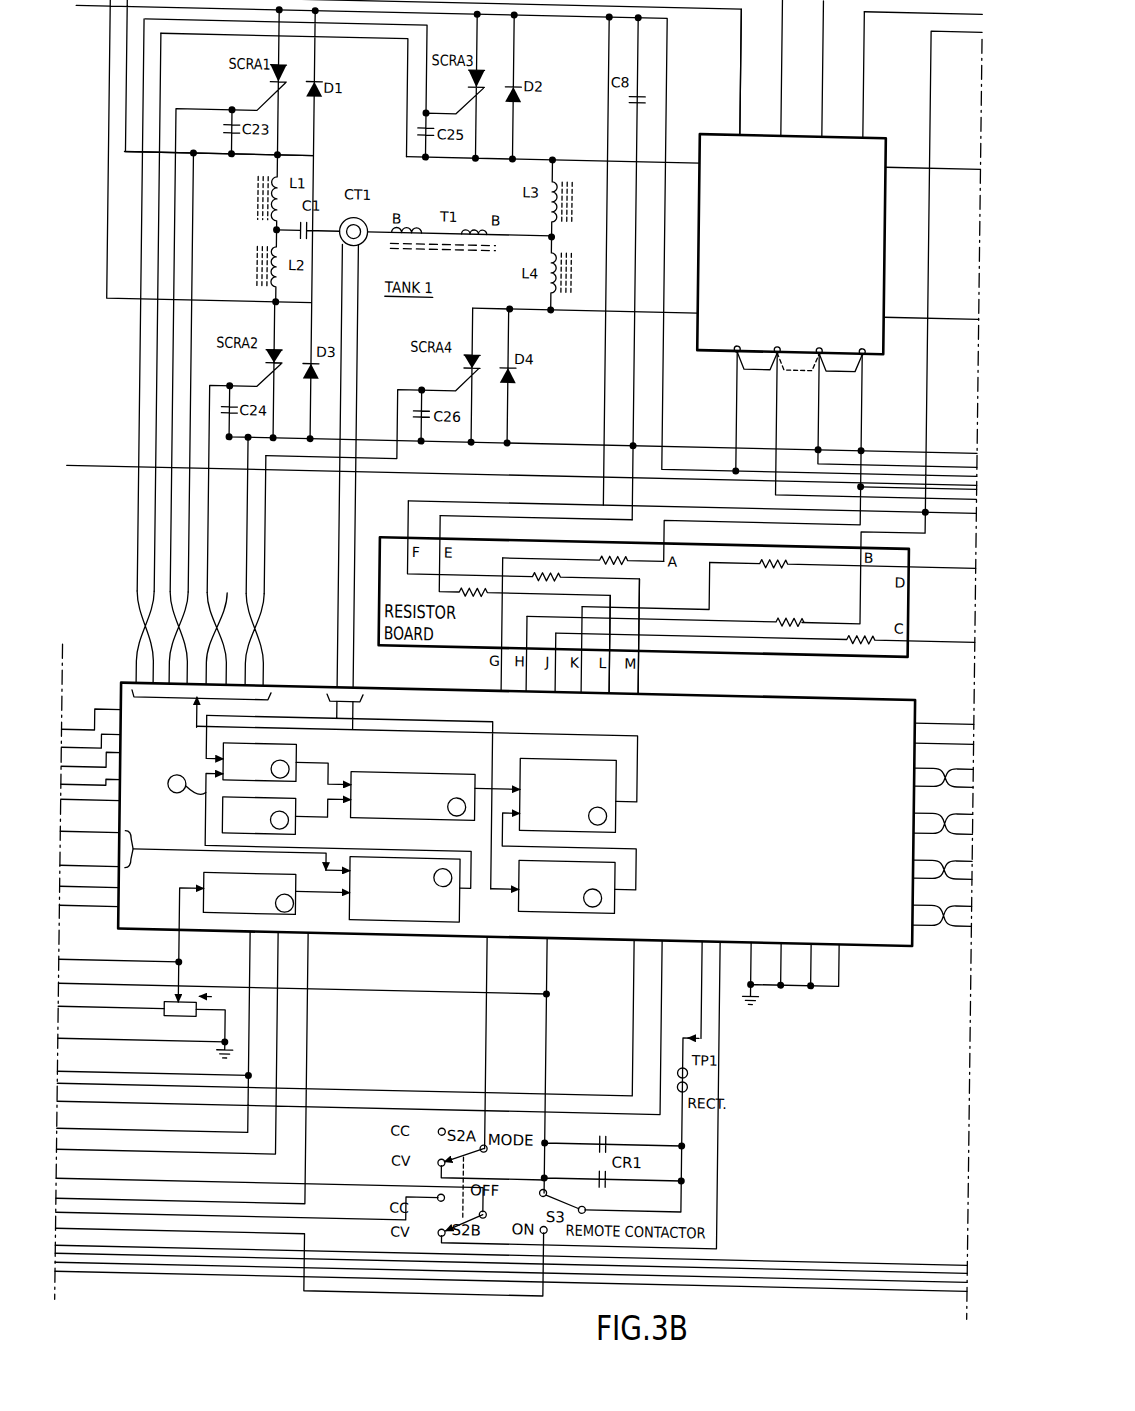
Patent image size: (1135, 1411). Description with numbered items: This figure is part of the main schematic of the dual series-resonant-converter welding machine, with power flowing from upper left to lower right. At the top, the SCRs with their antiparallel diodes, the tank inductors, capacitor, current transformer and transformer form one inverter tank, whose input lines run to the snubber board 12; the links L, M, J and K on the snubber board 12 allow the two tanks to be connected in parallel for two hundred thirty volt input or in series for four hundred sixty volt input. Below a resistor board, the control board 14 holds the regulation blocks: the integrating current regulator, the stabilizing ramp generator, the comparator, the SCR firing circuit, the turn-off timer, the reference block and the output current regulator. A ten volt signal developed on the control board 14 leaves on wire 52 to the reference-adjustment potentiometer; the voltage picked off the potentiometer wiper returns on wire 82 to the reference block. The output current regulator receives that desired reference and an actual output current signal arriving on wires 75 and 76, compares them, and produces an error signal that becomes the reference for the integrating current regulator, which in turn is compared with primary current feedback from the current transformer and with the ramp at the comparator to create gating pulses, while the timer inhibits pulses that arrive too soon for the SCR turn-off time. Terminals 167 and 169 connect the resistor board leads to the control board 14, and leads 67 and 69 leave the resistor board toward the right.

The snubber board 12 is at (712, 128).
The control board 14 is at (815, 698).
The wire 52 is at (86, 1017).
The resistor board output lead C 67 is at (924, 642).
The resistor board output lead B 69 is at (924, 568).
The wire 75 is at (80, 843).
The wire 76 is at (80, 877).
The wire 82 is at (181, 955).
The connector terminals G H J 167 is at (556, 688).
The connector terminals K L M 169 is at (583, 686).